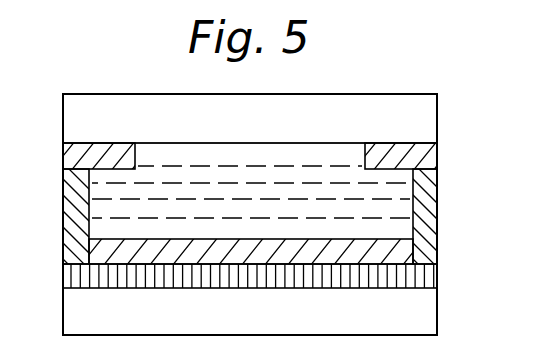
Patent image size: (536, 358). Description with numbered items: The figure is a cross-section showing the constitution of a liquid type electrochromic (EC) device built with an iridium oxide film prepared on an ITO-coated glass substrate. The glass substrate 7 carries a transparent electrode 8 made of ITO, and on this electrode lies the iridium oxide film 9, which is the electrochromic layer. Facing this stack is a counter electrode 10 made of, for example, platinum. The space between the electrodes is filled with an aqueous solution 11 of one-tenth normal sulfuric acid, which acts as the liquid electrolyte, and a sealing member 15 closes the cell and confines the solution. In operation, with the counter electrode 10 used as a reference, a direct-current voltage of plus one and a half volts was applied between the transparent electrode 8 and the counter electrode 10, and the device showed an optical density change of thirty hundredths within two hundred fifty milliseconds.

The glass substrate 7 is at (422, 111).
The transparent electrode 8 is at (418, 275).
The iridium oxide film 9 is at (388, 247).
The counter electrode 10 is at (422, 157).
The aqueous solution 11 is at (102, 214).
The sealing member 15 is at (422, 199).